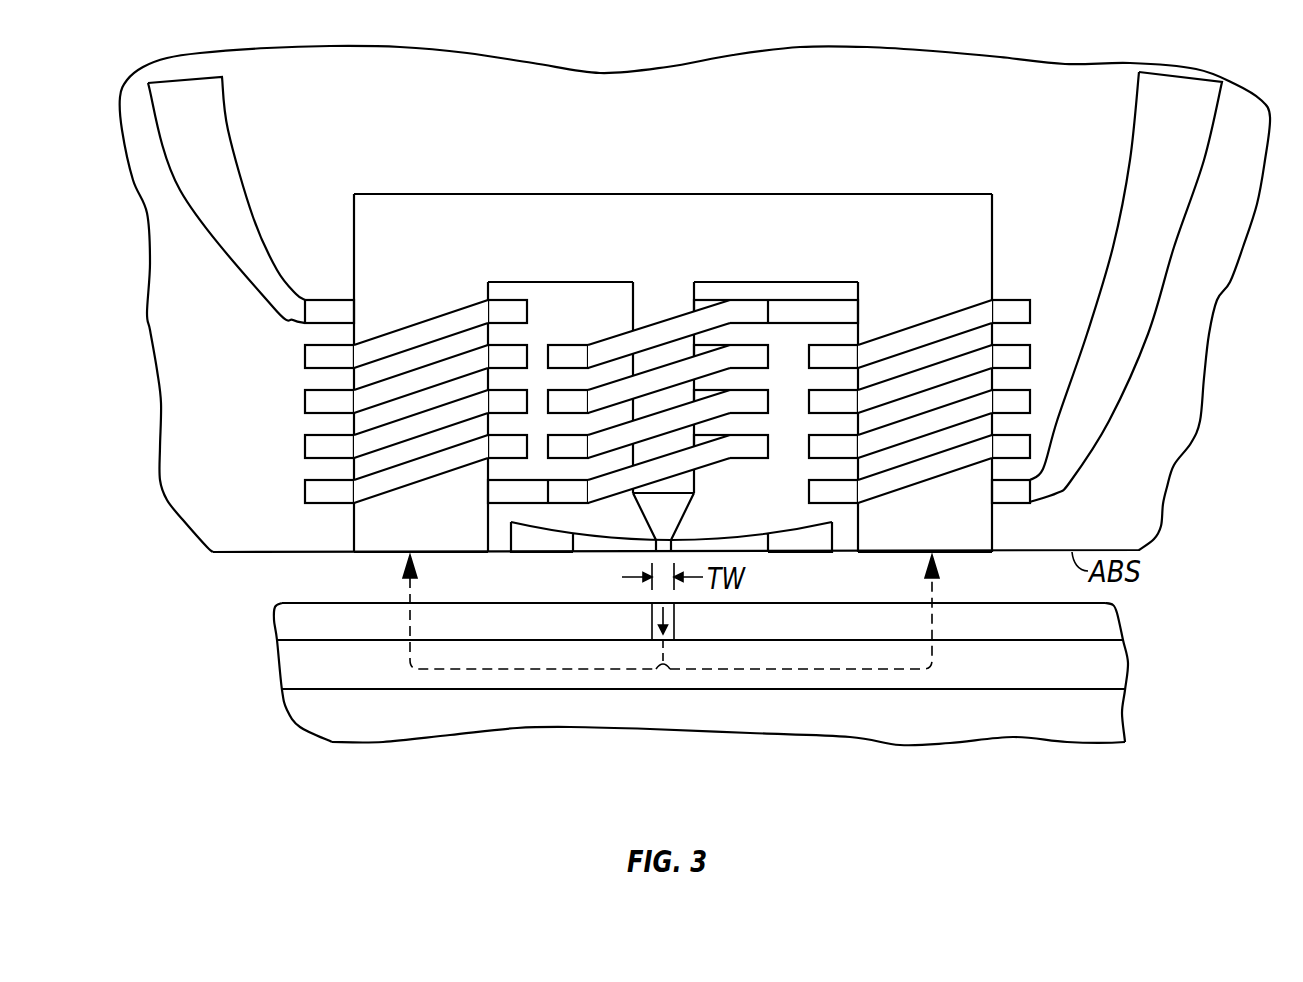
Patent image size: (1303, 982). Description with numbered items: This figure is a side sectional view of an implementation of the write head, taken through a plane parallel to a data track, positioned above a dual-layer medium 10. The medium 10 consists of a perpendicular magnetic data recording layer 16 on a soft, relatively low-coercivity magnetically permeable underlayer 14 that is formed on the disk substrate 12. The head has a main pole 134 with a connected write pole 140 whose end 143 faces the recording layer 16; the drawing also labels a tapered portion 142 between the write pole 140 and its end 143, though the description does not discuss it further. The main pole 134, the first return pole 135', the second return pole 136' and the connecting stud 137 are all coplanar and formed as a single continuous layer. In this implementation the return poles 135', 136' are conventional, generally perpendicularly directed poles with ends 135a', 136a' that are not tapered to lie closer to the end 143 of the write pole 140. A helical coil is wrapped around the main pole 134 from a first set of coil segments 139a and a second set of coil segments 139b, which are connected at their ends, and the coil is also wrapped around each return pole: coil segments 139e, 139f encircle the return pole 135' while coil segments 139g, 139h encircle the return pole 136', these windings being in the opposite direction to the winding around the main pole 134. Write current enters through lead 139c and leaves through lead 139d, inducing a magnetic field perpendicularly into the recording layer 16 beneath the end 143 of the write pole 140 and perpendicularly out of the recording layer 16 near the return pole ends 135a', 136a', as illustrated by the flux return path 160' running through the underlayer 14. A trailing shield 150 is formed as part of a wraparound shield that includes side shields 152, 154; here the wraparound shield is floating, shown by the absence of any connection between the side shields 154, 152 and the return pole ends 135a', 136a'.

The medium 10 is at (333, 742).
The disk substrate 12 is at (296, 713).
The soft underlayer 14 is at (290, 667).
The perpendicular magnetic data recording layer 16 is at (287, 624).
The main pole 134 is at (647, 295).
The first return pole 135' is at (451, 357).
The first return pole end 135a' is at (397, 571).
The second return pole 136' is at (961, 373).
The second return pole end 136a' is at (944, 569).
The connecting stud 137 is at (728, 212).
The first set of coil segments 139a is at (623, 362).
The second set of coil segments 139b is at (675, 323).
The lead 139c is at (218, 158).
The lead 139d is at (1148, 156).
The coil segments 139e is at (322, 308).
The coil segments 139f is at (383, 480).
The coil segments 139g is at (848, 313).
The coil segments 139h is at (883, 478).
The write pole 140 is at (695, 483).
The write pole tapered portion 142 is at (647, 510).
The end of write pole 143 is at (664, 555).
The trailing shield 150 is at (690, 538).
The side shield 152 is at (792, 546).
The side shield 154 is at (540, 546).
The flux return path 160' is at (673, 639).